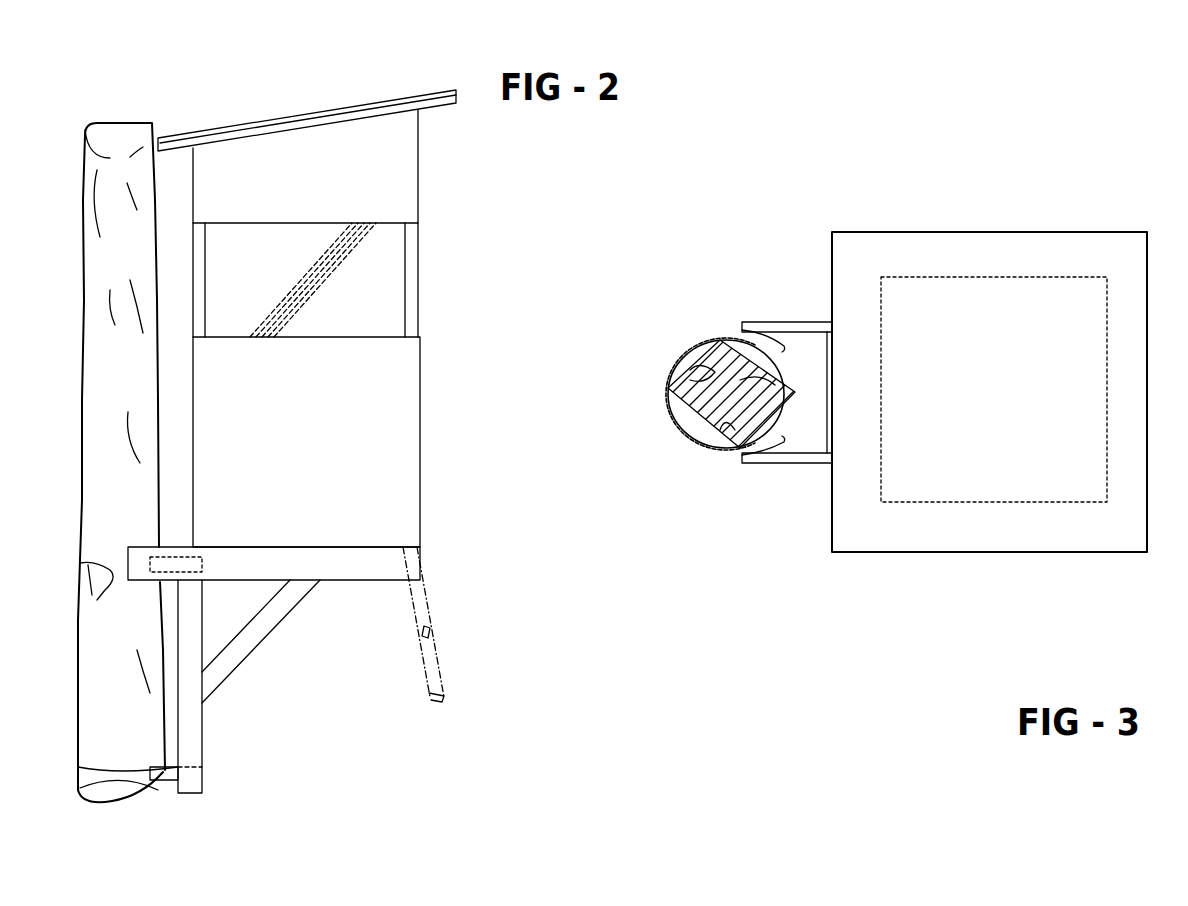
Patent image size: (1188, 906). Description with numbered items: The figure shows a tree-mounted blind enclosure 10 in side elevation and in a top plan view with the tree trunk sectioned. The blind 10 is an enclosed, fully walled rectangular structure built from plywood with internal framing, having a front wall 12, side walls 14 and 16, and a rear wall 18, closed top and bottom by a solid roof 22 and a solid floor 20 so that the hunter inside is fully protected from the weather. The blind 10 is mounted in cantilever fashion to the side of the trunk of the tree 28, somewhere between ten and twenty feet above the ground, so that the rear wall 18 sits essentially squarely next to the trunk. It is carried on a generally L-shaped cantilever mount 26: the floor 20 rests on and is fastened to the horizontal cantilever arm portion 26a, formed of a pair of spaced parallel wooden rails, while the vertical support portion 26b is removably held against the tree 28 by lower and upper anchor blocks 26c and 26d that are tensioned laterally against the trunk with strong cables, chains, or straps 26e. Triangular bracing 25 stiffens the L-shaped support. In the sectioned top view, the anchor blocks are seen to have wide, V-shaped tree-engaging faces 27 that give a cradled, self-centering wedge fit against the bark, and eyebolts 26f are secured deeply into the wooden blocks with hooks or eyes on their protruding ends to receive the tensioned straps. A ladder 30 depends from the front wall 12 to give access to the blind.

In FIG. 2, the tree-mounted blind enclosure 10 is at (463, 249).
In FIG. 3, the tree-mounted blind enclosure 10 is at (1078, 196).
In FIG. 2, the front wall 12 is at (420, 389).
In FIG. 3, the front wall 12 is at (1107, 390).
In FIG. 2, the side wall 14 is at (393, 478).
In FIG. 3, the side wall 14 is at (1001, 502).
In FIG. 2, the side wall 16 is at (305, 280).
In FIG. 3, the side wall 16 is at (1013, 277).
In FIG. 2, the rear wall 18 is at (193, 403).
In FIG. 2, the floor 20 is at (401, 548).
In FIG. 2, the roof 22 is at (287, 127).
In FIG. 3, the roof 22 is at (898, 232).
In FIG. 2, the triangular bracing 25 is at (258, 625).
In FIG. 2, the cantilever mount 26 is at (282, 689).
In FIG. 2, the horizontal cantilever arm portion 26a is at (348, 582).
In FIG. 2, the vertical support portion 26b is at (186, 687).
In FIG. 2, the lower anchor block 26c is at (170, 773).
In FIG. 2, the upper anchor block 26d is at (150, 563).
In FIG. 3, the upper anchor block 26d is at (808, 347).
In FIG. 2, the straps 26e is at (80, 580).
In FIG. 3, the eyebolts 26f is at (785, 348).
In FIG. 3, the V-shaped tree-engaging faces 27 is at (745, 337).
In FIG. 2, the tree 28 is at (108, 158).
In FIG. 3, the tree 28 is at (705, 367).
In FIG. 2, the ladder 30 is at (438, 632).